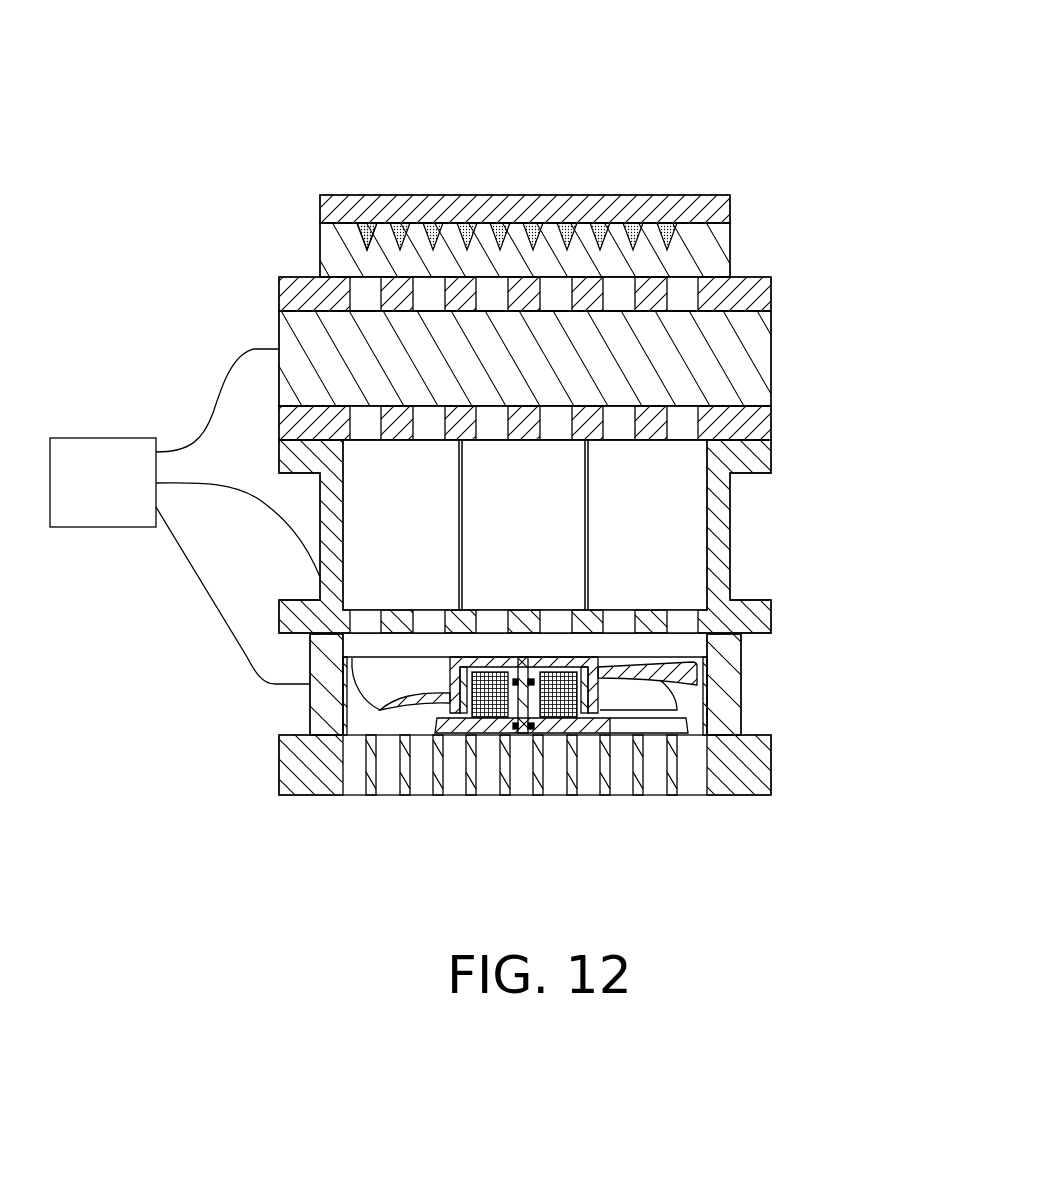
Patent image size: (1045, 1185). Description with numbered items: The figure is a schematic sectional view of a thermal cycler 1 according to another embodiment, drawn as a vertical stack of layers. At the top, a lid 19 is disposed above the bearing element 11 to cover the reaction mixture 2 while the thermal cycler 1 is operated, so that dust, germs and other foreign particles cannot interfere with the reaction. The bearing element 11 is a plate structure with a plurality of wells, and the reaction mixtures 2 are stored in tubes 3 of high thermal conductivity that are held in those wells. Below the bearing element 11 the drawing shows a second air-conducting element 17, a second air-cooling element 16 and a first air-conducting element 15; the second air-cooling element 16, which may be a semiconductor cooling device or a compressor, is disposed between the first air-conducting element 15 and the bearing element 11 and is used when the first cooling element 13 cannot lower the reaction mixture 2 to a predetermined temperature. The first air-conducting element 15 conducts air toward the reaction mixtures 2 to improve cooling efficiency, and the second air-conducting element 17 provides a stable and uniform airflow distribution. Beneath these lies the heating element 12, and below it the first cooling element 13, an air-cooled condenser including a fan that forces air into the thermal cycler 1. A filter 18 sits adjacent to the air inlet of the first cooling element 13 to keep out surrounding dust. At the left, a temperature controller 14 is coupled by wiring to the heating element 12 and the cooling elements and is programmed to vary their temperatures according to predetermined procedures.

The thermal cycler 1 is at (451, 397).
The reaction mixture 2 is at (365, 230).
The tube 3 is at (358, 226).
The bearing element 11 is at (714, 250).
The heating element 12 is at (722, 528).
The first cooling element 13 is at (732, 668).
The temperature controller 14 is at (104, 438).
The first air-conducting element 15 is at (763, 423).
The second air-cooling element 16 is at (752, 362).
The second air-conducting element 17 is at (760, 300).
The filter 18 is at (757, 767).
The lid 19 is at (700, 206).